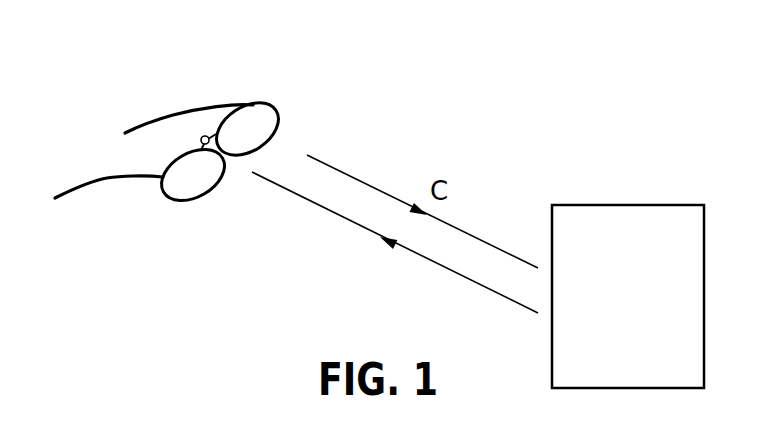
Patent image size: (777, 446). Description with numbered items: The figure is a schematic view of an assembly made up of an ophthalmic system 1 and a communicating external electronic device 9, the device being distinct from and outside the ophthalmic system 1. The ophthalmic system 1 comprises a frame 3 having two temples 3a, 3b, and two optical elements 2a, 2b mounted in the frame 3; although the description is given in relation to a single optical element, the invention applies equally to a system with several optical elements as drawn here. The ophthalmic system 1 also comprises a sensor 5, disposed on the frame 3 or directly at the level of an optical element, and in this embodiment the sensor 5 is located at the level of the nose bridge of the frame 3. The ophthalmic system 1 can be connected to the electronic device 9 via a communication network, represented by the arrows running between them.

The ophthalmic system 1 is at (282, 75).
The optical element 2a is at (255, 125).
The optical element 2b is at (183, 180).
The frame 3 is at (277, 133).
The temple 3a is at (189, 108).
The temple 3b is at (97, 178).
The sensor 5 is at (200, 141).
The external electronic device 9 is at (663, 228).